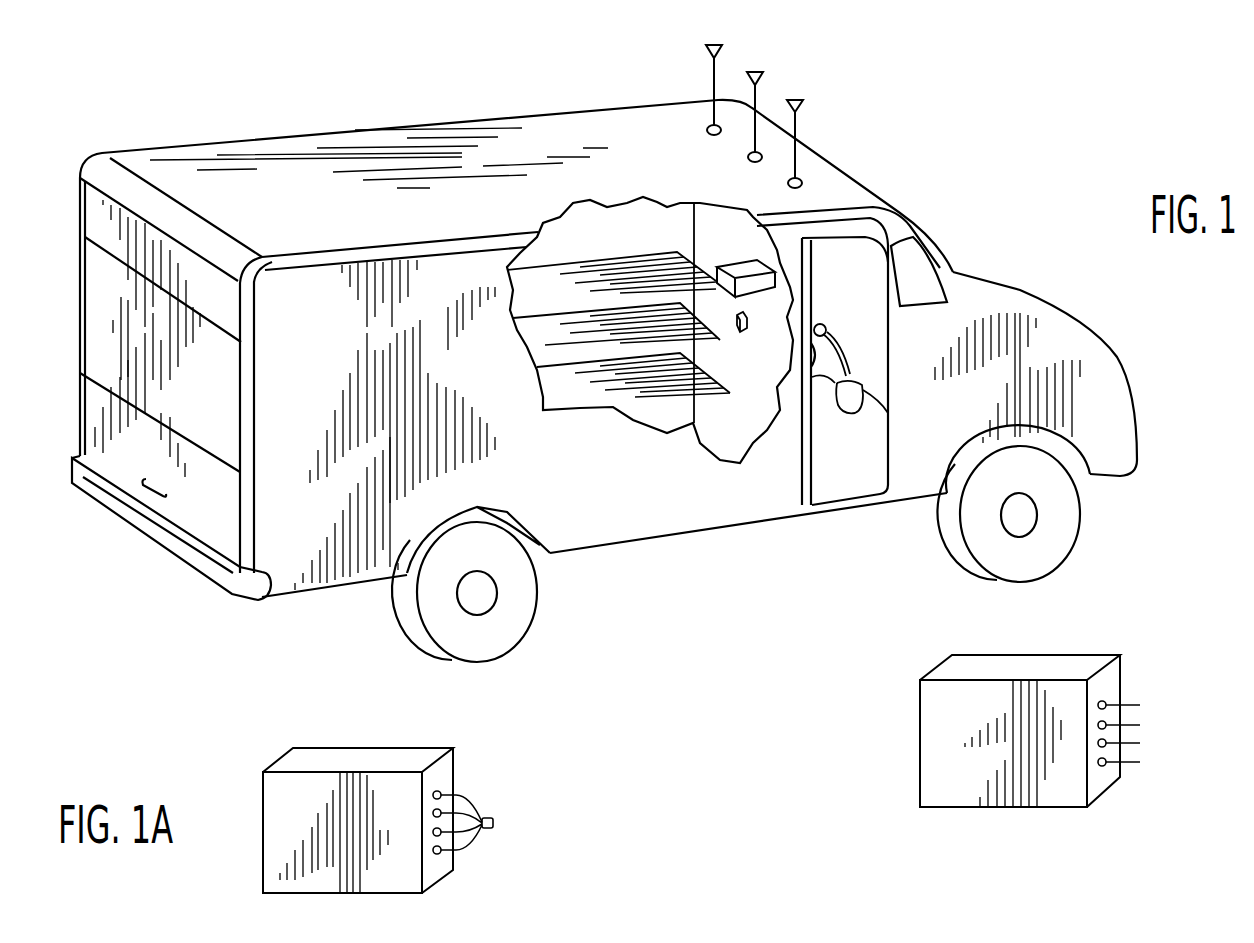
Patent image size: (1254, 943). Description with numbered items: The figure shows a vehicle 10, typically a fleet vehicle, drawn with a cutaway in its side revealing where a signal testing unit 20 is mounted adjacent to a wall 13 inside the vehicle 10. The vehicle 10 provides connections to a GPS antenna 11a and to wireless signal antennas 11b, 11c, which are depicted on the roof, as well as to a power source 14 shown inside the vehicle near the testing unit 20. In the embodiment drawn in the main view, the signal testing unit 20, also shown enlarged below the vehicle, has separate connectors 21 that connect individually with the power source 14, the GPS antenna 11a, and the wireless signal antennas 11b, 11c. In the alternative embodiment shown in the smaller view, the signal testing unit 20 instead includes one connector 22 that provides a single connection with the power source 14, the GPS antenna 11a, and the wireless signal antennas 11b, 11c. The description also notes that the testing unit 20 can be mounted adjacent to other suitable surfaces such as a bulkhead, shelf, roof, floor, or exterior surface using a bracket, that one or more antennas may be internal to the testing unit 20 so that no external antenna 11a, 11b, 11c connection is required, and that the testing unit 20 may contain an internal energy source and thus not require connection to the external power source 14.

In FIG. 1, the vehicle 10 is at (443, 123).
In FIG. 1, the GPS antenna 11a is at (722, 53).
In FIG. 1, the wireless signal antenna 11b is at (763, 78).
In FIG. 1, the wireless signal antenna 11c is at (803, 108).
In FIG. 1, the wall 13 is at (790, 288).
In FIG. 1, the power source 14 is at (733, 337).
In FIG. 1, the signal testing unit 20 is at (788, 285).
In FIG. 1A, the signal testing unit 20 is at (420, 722).
In FIG. 1, the separate connectors 21 is at (1137, 695).
In FIG. 1A, the connector 22 is at (488, 805).